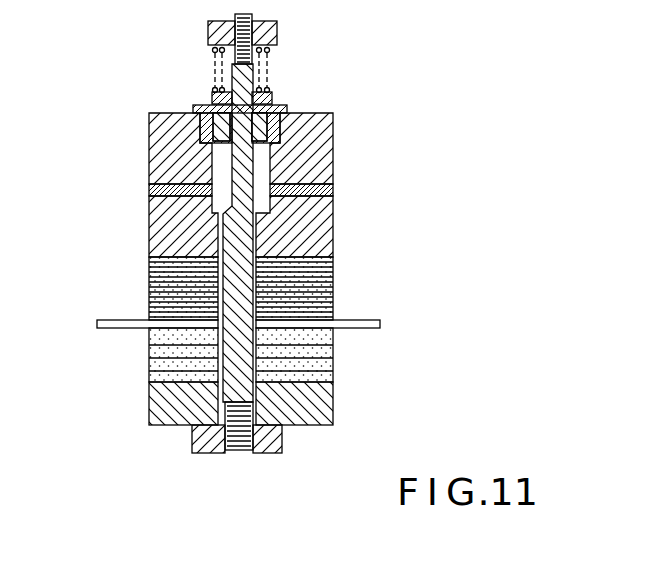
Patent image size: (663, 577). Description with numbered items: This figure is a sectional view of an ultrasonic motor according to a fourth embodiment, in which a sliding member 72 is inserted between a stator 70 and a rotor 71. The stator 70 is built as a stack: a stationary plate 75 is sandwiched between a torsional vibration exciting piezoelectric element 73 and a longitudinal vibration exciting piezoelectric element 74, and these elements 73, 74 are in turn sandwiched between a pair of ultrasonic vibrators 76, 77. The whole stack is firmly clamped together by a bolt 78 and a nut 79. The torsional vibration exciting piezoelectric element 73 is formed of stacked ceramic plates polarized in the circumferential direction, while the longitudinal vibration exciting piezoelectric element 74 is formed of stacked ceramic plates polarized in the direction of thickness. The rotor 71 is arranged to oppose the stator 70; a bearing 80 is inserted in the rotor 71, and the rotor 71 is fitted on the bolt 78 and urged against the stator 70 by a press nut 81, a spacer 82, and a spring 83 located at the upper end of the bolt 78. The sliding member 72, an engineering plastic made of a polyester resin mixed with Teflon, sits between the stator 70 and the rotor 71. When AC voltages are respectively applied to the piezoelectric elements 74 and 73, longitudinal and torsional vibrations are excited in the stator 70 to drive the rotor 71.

The stator 70 is at (84, 256).
The rotor 71 is at (328, 155).
The sliding member 72 is at (330, 190).
The torsional vibration exciting piezoelectric element 73 is at (330, 376).
The longitudinal vibration exciting piezoelectric element 74 is at (330, 272).
The stationary plate 75 is at (365, 321).
The ultrasonic vibrator 76 is at (318, 418).
The ultrasonic vibrator 77 is at (330, 228).
The bolt 78 is at (236, 447).
The nut 79 is at (200, 435).
The bearing 80 is at (285, 106).
The press nut 81 is at (272, 35).
The spacer 82 is at (270, 92).
The spring 83 is at (268, 62).